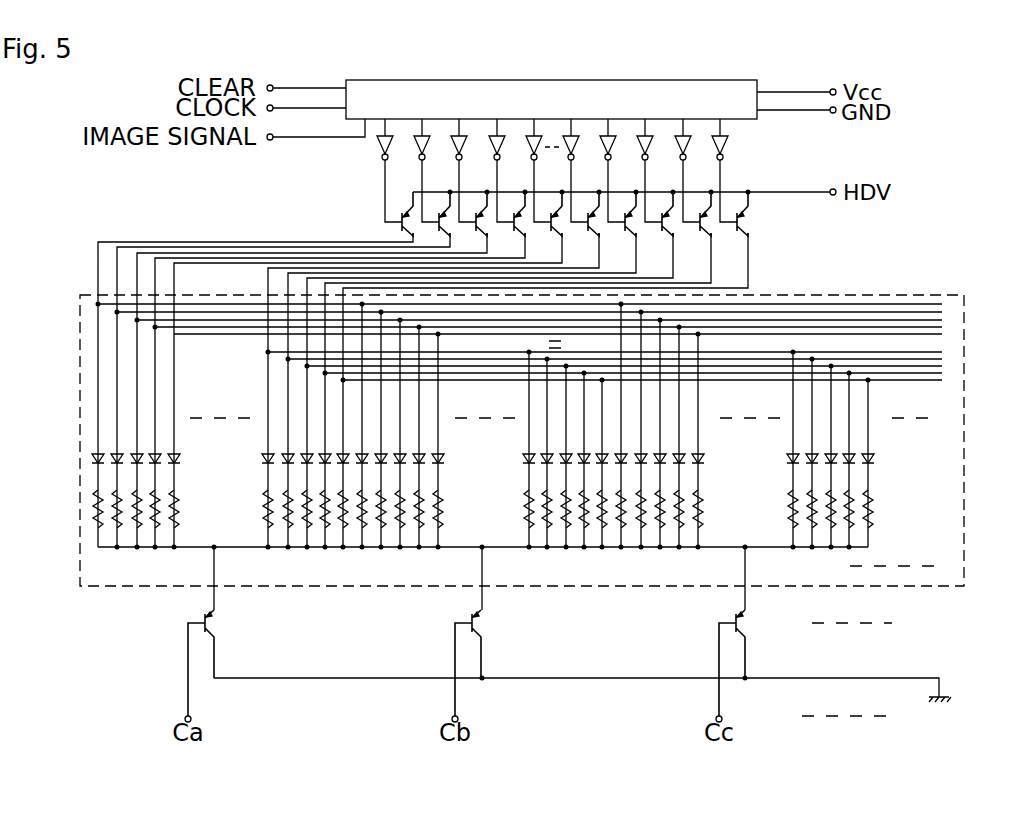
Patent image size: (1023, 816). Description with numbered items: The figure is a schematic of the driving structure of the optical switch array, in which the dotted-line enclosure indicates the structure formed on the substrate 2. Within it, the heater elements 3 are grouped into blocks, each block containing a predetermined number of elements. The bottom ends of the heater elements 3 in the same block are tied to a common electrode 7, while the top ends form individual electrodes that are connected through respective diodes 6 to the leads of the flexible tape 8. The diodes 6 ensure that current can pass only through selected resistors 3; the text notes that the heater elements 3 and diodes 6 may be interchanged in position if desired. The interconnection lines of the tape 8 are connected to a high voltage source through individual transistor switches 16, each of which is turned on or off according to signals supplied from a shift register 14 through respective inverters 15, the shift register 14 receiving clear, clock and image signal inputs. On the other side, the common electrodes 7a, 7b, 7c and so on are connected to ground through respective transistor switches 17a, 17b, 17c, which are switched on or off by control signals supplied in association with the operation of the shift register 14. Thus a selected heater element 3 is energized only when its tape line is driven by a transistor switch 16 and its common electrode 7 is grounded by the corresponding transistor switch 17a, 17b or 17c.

The substrate 2 is at (967, 502).
The heater element 3 is at (875, 520).
The diode 6 is at (875, 462).
The common electrode 7 is at (212, 575).
The common electrode 7a is at (218, 562).
The common electrode 7b is at (486, 571).
The common electrode 7c is at (749, 572).
The flexible tape 8 is at (984, 303).
The shift register 14 is at (640, 80).
The inverter 15 is at (728, 152).
The transistor switch 16 is at (747, 222).
The transistor switch 17a is at (218, 626).
The transistor switch 17b is at (485, 626).
The transistor switch 17c is at (749, 626).